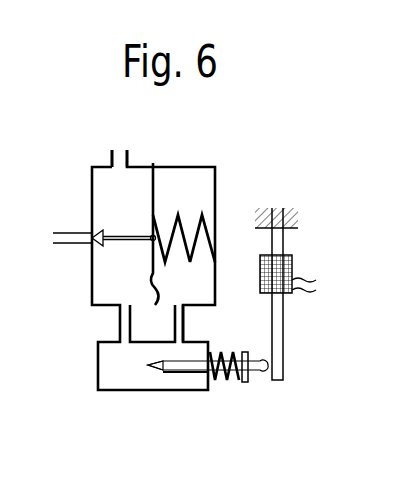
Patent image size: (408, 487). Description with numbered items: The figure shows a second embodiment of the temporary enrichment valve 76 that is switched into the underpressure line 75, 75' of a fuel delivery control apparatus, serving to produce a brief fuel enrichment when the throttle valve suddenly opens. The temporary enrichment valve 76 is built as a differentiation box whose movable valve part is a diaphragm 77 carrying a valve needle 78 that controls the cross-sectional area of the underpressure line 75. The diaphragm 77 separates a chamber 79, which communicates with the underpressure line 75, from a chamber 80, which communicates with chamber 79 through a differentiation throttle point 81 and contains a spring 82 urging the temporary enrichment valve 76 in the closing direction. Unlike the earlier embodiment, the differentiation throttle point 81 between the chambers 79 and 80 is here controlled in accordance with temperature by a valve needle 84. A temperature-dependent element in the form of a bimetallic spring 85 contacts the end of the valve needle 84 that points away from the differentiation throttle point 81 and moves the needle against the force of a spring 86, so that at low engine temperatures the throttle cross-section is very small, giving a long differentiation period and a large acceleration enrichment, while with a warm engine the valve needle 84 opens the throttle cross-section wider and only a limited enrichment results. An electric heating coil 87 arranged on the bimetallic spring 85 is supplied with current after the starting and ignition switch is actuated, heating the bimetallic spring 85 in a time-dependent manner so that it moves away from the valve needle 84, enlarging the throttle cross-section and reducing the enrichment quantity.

The underpressure line 75 is at (60, 224).
The underpressure line 75' is at (150, 141).
The temporary enrichment valve 76 is at (86, 260).
The diaphragm 77 is at (157, 191).
The valve needle 78 is at (129, 235).
The chamber 79 is at (100, 183).
The chamber 80 is at (205, 183).
The differentiation throttle point 81 is at (149, 378).
The spring 82 is at (191, 258).
The valve needle 84 is at (185, 372).
The bimetallic spring 85 is at (280, 318).
The spring 86 is at (219, 380).
The electric heating coil 87 is at (284, 273).